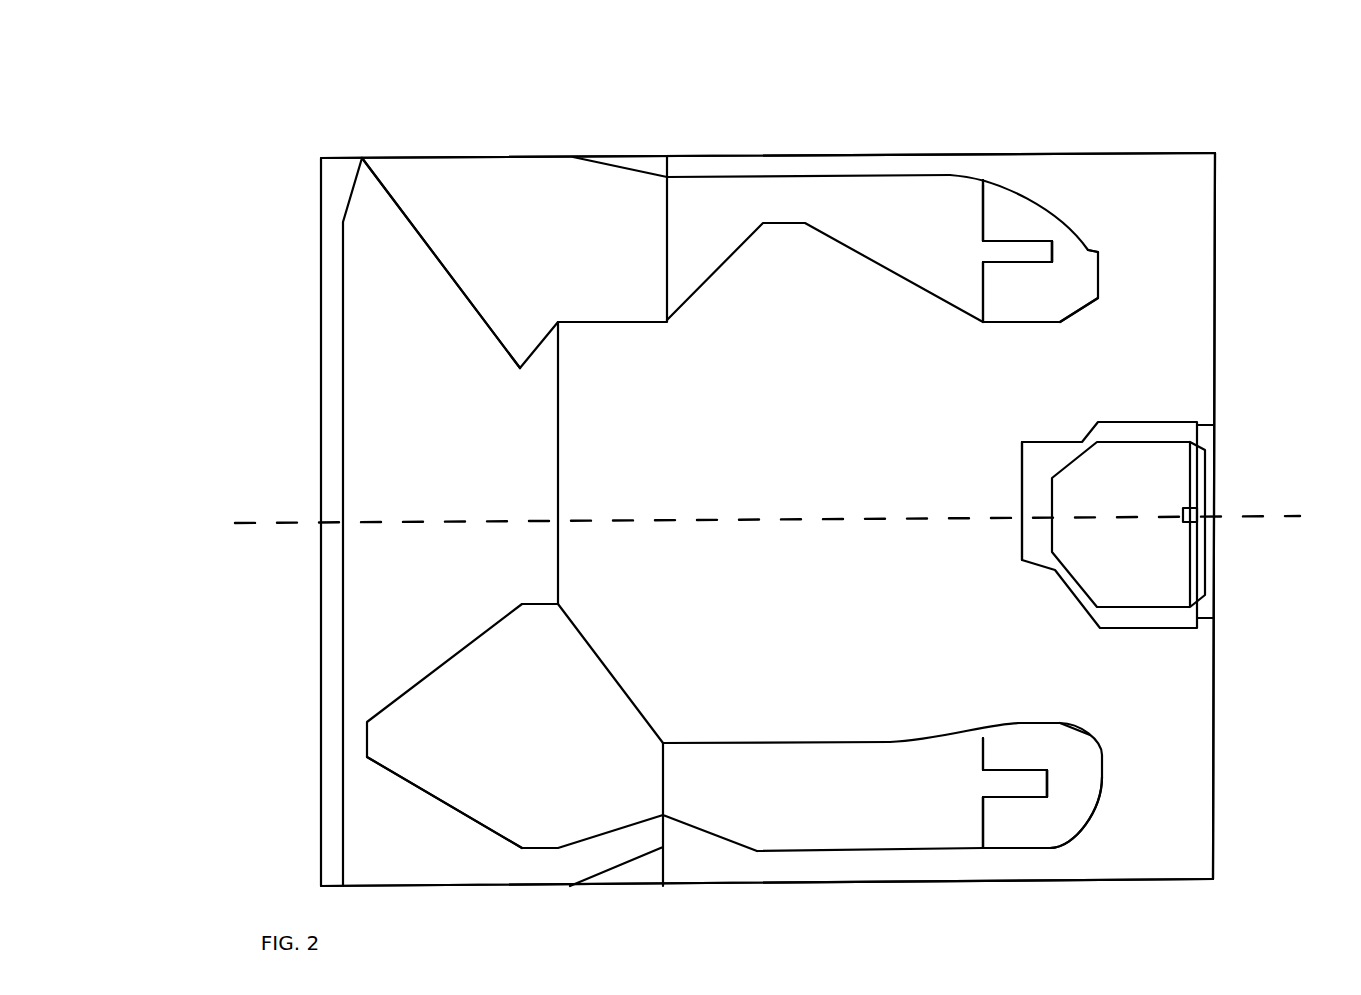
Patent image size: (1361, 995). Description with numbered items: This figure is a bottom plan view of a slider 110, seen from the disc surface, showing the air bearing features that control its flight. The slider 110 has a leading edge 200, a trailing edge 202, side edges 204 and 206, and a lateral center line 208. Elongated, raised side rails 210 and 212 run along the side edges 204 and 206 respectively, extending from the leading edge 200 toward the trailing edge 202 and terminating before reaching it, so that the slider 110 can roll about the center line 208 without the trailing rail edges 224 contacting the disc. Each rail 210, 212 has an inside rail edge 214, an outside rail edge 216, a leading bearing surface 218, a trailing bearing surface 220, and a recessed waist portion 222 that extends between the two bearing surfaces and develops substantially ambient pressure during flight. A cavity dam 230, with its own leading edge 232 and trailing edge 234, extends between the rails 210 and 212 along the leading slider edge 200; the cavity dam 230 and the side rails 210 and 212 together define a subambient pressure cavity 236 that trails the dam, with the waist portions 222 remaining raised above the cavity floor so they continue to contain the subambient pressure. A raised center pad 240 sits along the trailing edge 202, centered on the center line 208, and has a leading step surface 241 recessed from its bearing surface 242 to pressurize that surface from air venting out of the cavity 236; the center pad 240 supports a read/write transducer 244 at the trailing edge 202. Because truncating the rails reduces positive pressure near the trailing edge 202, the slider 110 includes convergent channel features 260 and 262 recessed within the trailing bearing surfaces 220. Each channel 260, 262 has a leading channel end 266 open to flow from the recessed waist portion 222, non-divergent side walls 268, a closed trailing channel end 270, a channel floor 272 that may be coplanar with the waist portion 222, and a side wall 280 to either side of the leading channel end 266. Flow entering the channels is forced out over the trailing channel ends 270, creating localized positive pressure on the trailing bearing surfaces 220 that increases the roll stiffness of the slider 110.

The slider 110 is at (292, 182).
The leading edge 200 is at (321, 452).
The trailing edge 202 is at (1220, 258).
The side edge 204 is at (622, 156).
The side edge 206 is at (607, 888).
The lateral center line 208 is at (280, 522).
The side rail 210 is at (483, 205).
The side rail 212 is at (465, 822).
The inside rail edge 214 is at (745, 243).
The outside rail edge 216 is at (742, 182).
The leading bearing surface 218 is at (560, 185).
The trailing bearing surface 220 is at (1003, 203).
The recessed waist portion 222 is at (850, 190).
The trailing rail edge 224 is at (1100, 288).
The cavity dam 230 is at (395, 575).
The leading edge of cavity dam 232 is at (343, 645).
The trailing edge of cavity dam 234 is at (558, 487).
The subambient pressure cavity 236 is at (773, 433).
The center pad 240 is at (1018, 438).
The leading step surface 241 is at (1037, 535).
The bearing surface 242 is at (1177, 475).
The read/write transducer 244 is at (1197, 510).
The convergent channel feature 260 is at (1023, 233).
The convergent channel feature 262 is at (1013, 803).
The leading channel end 266 is at (983, 254).
The non-divergent side wall 268 is at (1052, 248).
The trailing channel end 270 is at (1060, 250).
The channel floor 272 is at (1052, 262).
The side wall 280 is at (983, 210).